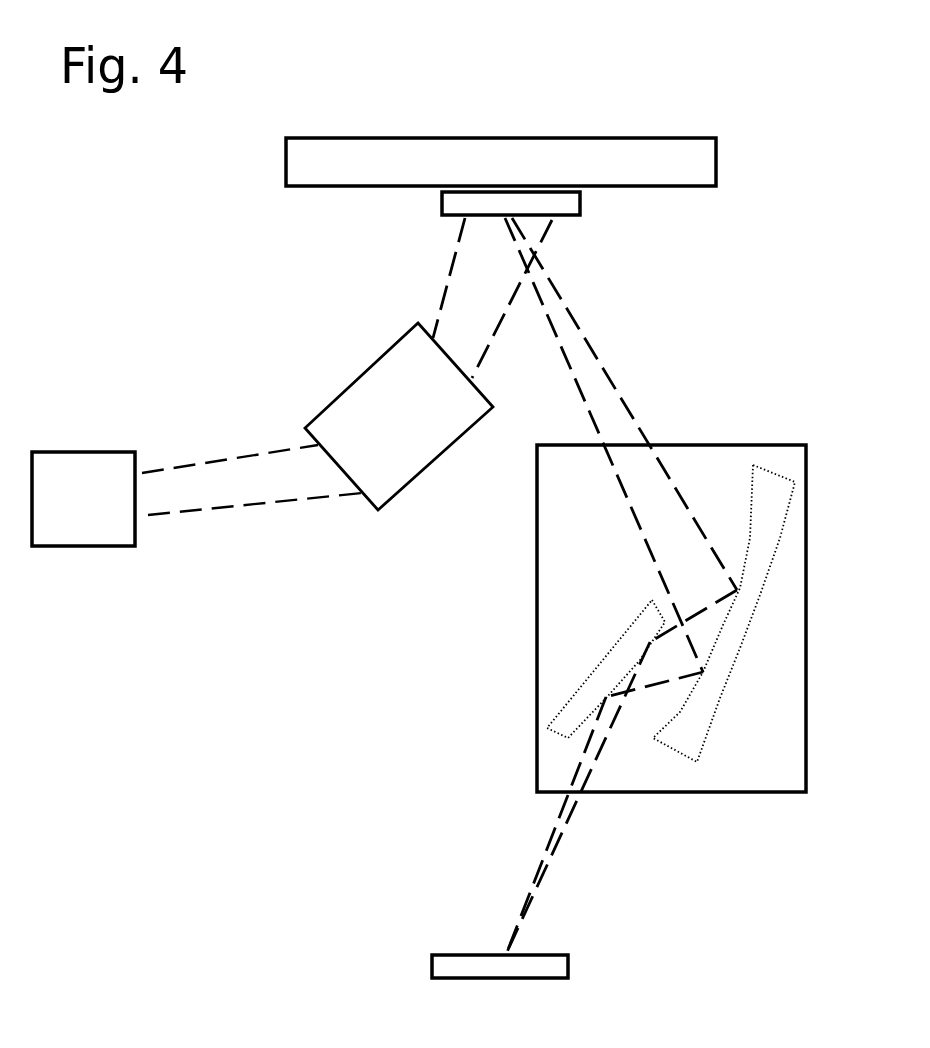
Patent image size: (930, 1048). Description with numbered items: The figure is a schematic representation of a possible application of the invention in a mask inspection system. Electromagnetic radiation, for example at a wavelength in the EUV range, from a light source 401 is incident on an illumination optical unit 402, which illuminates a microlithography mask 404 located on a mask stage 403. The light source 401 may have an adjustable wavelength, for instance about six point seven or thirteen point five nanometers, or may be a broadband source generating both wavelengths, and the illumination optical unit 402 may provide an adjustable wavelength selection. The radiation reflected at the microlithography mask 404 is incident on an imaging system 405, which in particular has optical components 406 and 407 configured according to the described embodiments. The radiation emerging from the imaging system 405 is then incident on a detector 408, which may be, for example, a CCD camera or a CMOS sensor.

The light source 401 is at (94, 522).
The illumination optical unit 402 is at (410, 461).
The mask stage 403 is at (354, 164).
The microlithography mask 404 is at (553, 203).
The imaging system 405 is at (600, 511).
The optical component 406 is at (703, 698).
The optical component 407 is at (603, 672).
The detector 408 is at (555, 953).